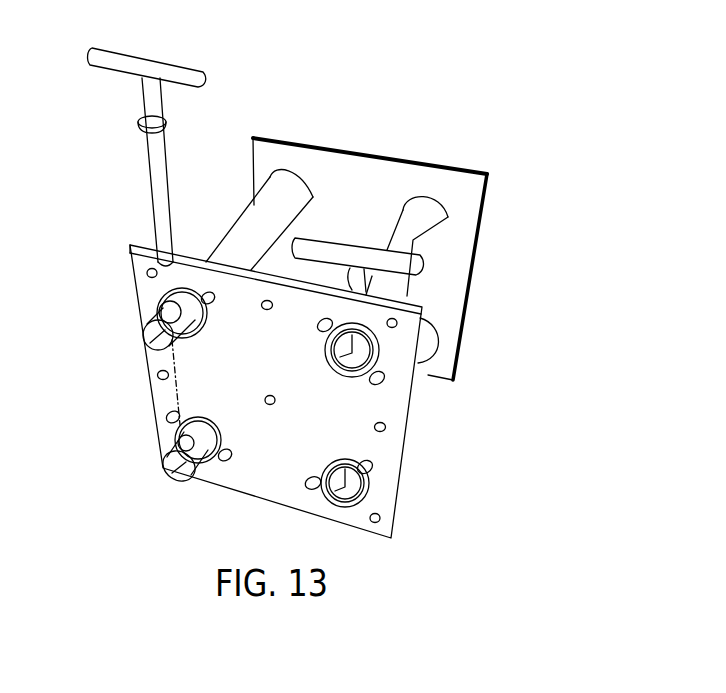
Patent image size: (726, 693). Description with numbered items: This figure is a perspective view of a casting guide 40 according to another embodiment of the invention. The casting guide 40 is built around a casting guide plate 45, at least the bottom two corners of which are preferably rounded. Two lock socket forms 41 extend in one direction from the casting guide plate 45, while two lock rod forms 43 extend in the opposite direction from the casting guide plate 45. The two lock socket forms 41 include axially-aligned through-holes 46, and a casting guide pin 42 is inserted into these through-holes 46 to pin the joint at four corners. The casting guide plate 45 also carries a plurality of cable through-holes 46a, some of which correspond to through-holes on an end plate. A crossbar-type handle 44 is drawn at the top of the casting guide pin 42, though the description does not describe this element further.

The casting guide 40 is at (501, 219).
The lock socket form 41 is at (150, 343).
The casting guide pin 42 is at (148, 188).
The lock rod form 43 is at (345, 362).
The handle 44 is at (172, 62).
The casting guide plate 45 is at (403, 410).
The through-hole 46 is at (167, 300).
The cable through-hole 46a is at (158, 378).